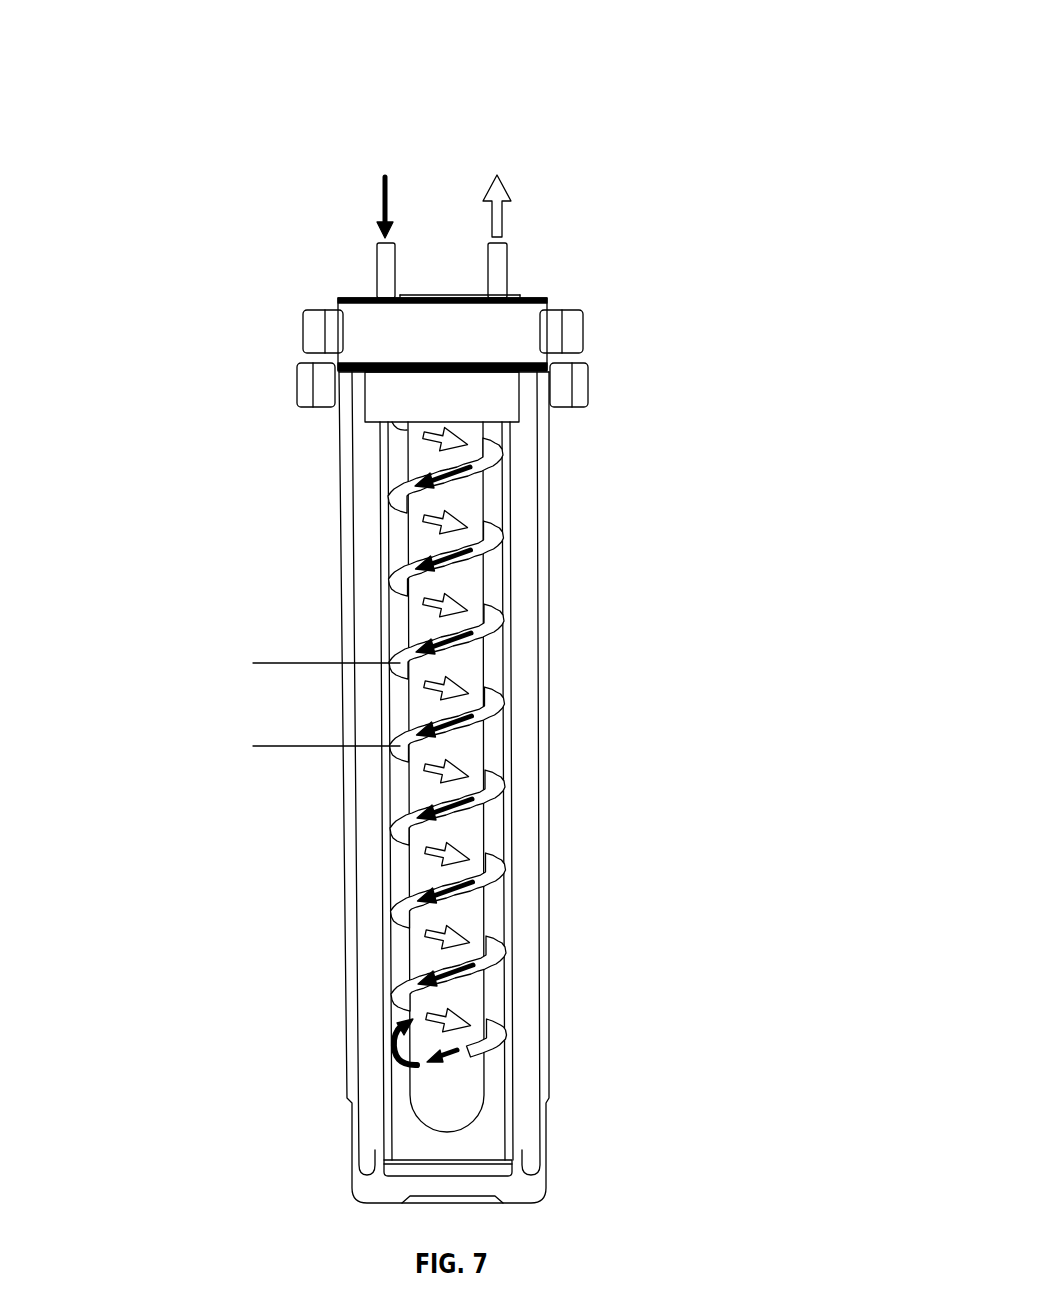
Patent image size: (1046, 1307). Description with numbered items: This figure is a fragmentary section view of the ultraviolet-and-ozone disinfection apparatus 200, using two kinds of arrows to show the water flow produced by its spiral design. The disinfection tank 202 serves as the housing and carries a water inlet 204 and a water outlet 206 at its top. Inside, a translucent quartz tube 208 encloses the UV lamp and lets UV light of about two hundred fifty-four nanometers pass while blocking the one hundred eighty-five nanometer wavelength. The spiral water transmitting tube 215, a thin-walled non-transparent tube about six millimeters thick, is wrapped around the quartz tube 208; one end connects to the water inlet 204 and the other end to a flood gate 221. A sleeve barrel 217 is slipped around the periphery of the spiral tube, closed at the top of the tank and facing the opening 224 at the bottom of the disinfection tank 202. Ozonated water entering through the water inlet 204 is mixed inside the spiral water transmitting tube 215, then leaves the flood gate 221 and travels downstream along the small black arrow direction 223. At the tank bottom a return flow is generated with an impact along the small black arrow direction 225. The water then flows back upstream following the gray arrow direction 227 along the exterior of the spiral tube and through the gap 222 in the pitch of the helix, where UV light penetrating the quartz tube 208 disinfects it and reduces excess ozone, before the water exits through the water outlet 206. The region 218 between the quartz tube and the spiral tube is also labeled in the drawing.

The ultraviolet-and-ozone disinfection apparatus 200 is at (480, 52).
The disinfection tank 202 is at (330, 583).
The water inlet 204 is at (387, 219).
The water outlet 206 is at (498, 219).
The quartz tube 208 is at (494, 496).
The spiral water transmitting tube 215 is at (452, 760).
The sleeve barrel 217 is at (521, 572).
The central tube 218 is at (507, 747).
The flood gate 221 is at (463, 1069).
The gap in the pitch of the helix 222 is at (297, 672).
The small black arrow direction 223 is at (401, 488).
The opening 224 is at (482, 1148).
The small black arrow direction 225 is at (380, 1037).
The gray arrow direction 227 is at (411, 530).